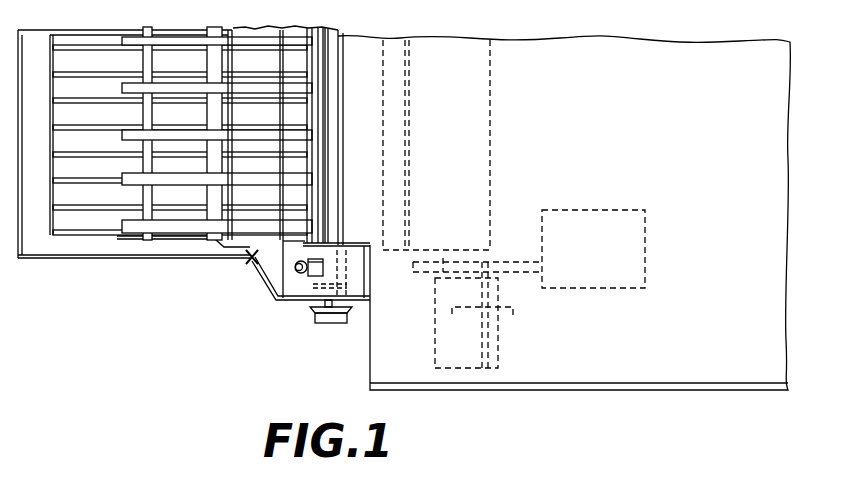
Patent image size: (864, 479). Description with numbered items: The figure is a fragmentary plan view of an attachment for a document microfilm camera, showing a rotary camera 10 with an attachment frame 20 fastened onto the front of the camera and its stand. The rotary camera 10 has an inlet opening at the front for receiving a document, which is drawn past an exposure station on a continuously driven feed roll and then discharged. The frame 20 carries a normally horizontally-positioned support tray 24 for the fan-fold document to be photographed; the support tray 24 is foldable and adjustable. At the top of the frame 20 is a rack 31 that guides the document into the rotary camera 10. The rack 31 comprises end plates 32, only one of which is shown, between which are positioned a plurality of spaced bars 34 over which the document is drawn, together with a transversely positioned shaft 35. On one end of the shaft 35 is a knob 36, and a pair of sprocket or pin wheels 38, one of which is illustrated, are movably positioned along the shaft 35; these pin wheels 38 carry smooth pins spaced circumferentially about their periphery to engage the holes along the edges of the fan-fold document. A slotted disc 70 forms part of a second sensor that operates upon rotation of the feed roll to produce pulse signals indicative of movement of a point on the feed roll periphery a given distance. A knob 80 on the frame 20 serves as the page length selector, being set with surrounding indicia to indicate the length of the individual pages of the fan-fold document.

The rotary camera 10 is at (618, 397).
The frame 20 is at (231, 164).
The support tray 24 is at (60, 236).
The rack 31 is at (246, 266).
The end plates 32 is at (267, 283).
The spaced bars 34 is at (130, 90).
The shaft 35 is at (333, 123).
The knob 36 is at (329, 323).
The pin wheels 38 is at (340, 192).
The slotted disc 70 is at (513, 308).
The knob 80 is at (299, 276).